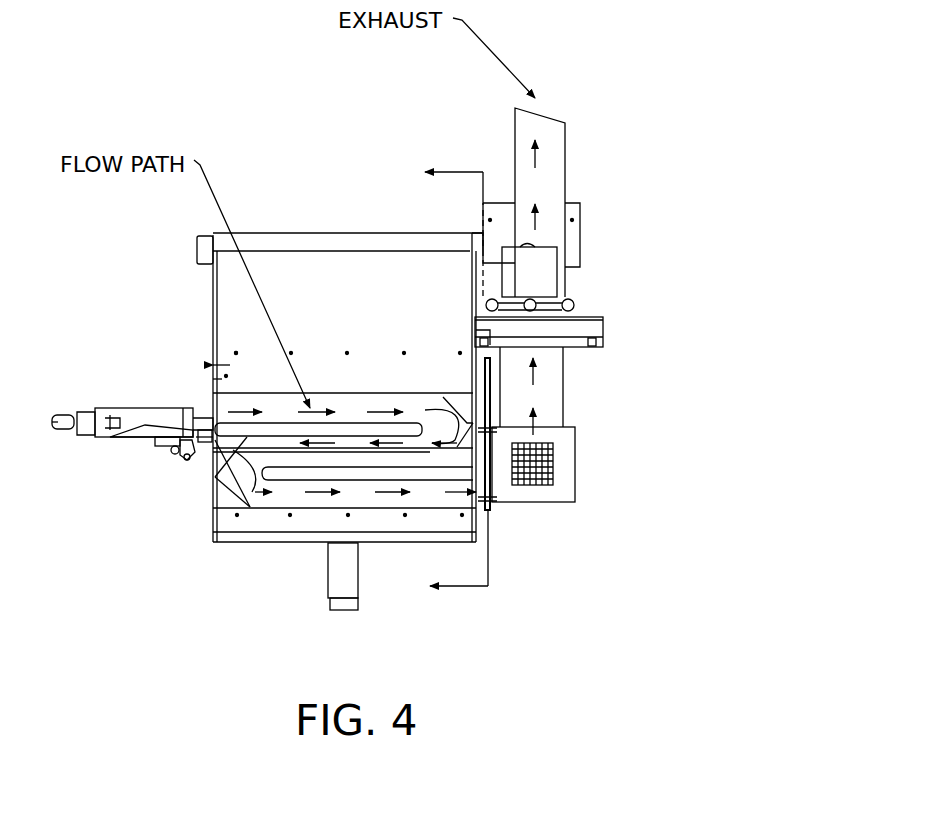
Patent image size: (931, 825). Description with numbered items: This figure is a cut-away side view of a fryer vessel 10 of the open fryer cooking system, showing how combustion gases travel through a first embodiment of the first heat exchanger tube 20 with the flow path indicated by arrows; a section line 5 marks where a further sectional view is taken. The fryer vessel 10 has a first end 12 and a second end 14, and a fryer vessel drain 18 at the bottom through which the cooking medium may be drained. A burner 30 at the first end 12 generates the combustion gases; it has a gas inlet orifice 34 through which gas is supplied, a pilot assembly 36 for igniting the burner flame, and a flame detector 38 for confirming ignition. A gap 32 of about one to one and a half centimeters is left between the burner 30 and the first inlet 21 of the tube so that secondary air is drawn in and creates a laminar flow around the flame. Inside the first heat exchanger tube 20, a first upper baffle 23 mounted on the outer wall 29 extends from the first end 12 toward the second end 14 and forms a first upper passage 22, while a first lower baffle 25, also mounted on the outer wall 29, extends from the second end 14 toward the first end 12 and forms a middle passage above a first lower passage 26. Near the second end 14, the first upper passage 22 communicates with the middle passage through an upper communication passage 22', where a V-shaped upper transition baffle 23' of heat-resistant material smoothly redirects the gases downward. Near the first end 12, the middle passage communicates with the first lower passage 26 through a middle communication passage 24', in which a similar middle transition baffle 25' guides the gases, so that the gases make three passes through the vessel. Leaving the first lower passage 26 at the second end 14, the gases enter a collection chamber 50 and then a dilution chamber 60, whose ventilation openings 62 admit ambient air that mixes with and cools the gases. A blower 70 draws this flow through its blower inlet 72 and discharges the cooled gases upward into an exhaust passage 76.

The section line 5- 5 is at (456, 383).
The fryer vessel 10 is at (385, 268).
The first end 12 is at (213, 292).
The second end 14 is at (470, 308).
The fryer vessel drain 18 is at (360, 590).
The first heat exchanger tube 20 is at (372, 394).
The first inlet 21 is at (222, 408).
The first upper passage 22 is at (318, 379).
The upper communication passage 22' is at (431, 403).
The first upper baffle 23 is at (345, 384).
The upper transition baffle 23' is at (446, 384).
The middle communication passage 24' is at (229, 516).
The first lower baffle 25 is at (367, 526).
The middle transition baffle 25' is at (196, 502).
The first lower passage 26 is at (305, 500).
The outer wall 29 is at (312, 393).
The burner 30 is at (122, 406).
The gap 32 is at (205, 395).
The gas inlet orifice 34 is at (60, 405).
The pilot assembly 36 is at (157, 450).
The flame detector 38 is at (185, 462).
The collection chamber 50 is at (485, 515).
The dilution chamber 60 is at (575, 470).
The ventilation openings 62 is at (540, 470).
The blower 70 is at (603, 332).
The blower inlet 72 is at (563, 390).
The exhaust passage 76 is at (565, 166).